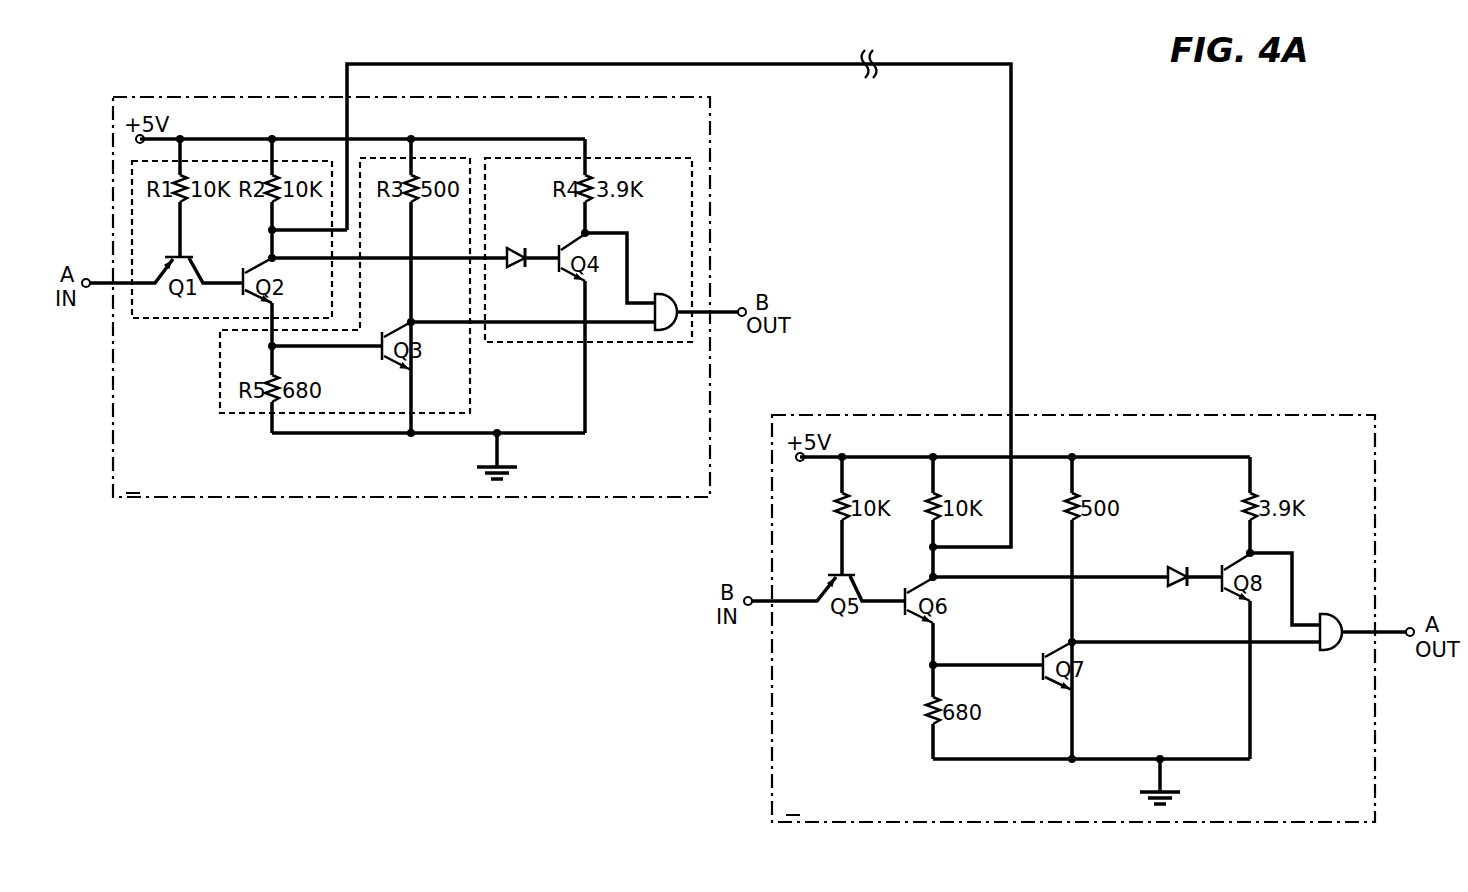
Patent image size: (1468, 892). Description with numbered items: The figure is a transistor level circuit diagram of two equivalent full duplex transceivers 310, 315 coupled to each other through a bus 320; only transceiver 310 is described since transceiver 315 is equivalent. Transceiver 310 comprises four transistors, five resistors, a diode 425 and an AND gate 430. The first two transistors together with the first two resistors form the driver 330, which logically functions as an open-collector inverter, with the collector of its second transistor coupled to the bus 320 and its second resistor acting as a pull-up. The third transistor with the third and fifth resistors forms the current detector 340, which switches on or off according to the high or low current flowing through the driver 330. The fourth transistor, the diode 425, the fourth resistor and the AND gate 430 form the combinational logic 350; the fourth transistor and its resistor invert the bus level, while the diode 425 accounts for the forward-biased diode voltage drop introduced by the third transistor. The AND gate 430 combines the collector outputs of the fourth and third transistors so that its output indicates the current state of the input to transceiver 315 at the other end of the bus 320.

The full duplex transceiver 310 is at (710, 168).
The full duplex transceiver 315 is at (772, 712).
The bus 320 is at (1011, 262).
The driver 330 is at (165, 318).
The current detector 340 is at (470, 392).
The combinational logic 350 is at (630, 342).
The diode 425 is at (517, 248).
The AND gate 430 is at (665, 293).